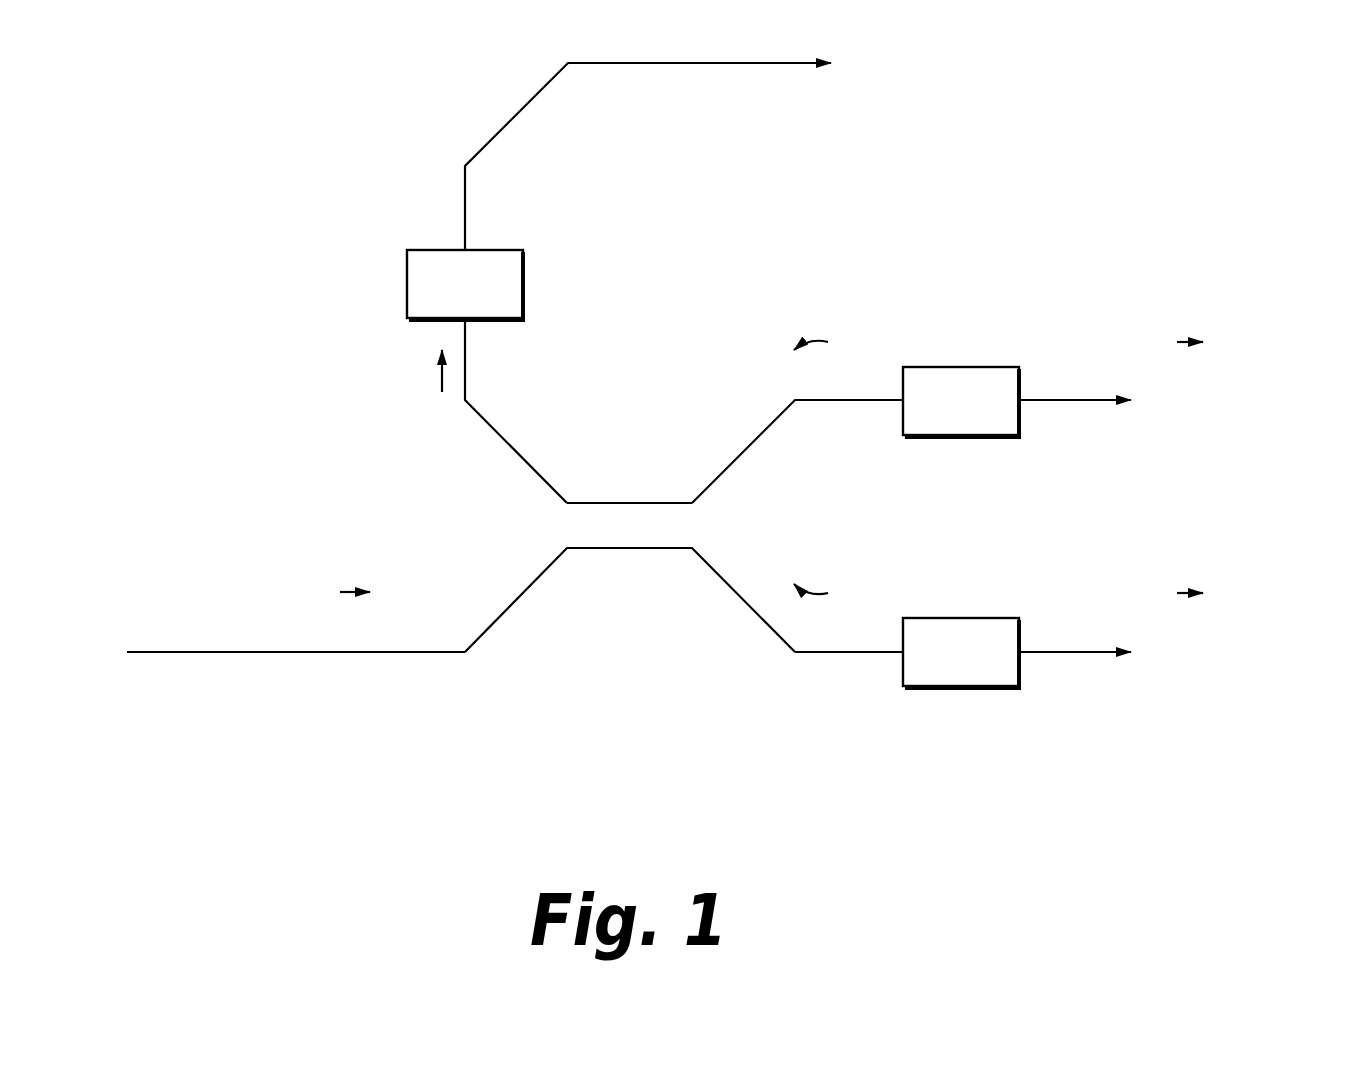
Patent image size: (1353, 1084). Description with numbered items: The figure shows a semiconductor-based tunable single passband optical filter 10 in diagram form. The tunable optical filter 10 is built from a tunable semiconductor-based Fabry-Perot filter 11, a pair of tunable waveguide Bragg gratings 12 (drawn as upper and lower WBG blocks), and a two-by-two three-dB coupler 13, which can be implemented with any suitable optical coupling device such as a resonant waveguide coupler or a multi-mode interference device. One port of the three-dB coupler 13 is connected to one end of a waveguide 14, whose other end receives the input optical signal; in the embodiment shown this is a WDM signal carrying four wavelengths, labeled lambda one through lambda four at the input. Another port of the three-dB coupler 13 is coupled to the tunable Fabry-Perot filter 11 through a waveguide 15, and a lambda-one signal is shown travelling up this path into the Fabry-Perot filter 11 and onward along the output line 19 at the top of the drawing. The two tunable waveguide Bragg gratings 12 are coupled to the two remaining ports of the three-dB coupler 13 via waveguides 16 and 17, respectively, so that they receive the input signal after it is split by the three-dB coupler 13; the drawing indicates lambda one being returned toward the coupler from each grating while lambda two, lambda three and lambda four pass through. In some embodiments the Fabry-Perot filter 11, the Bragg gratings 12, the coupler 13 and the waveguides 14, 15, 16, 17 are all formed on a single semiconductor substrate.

The tunable optical filter 10 is at (1198, 147).
The tunable Fabry-Perot filter 11 is at (523, 278).
The tunable waveguide Bragg grating 12 is at (1019, 417).
The three-dB coupler 13 is at (628, 482).
The waveguide 14 is at (296, 645).
The waveguide 15 is at (465, 352).
The waveguide 16 is at (835, 401).
The waveguide 17 is at (835, 654).
The Fabry-Perot output waveguide 19 is at (693, 64).